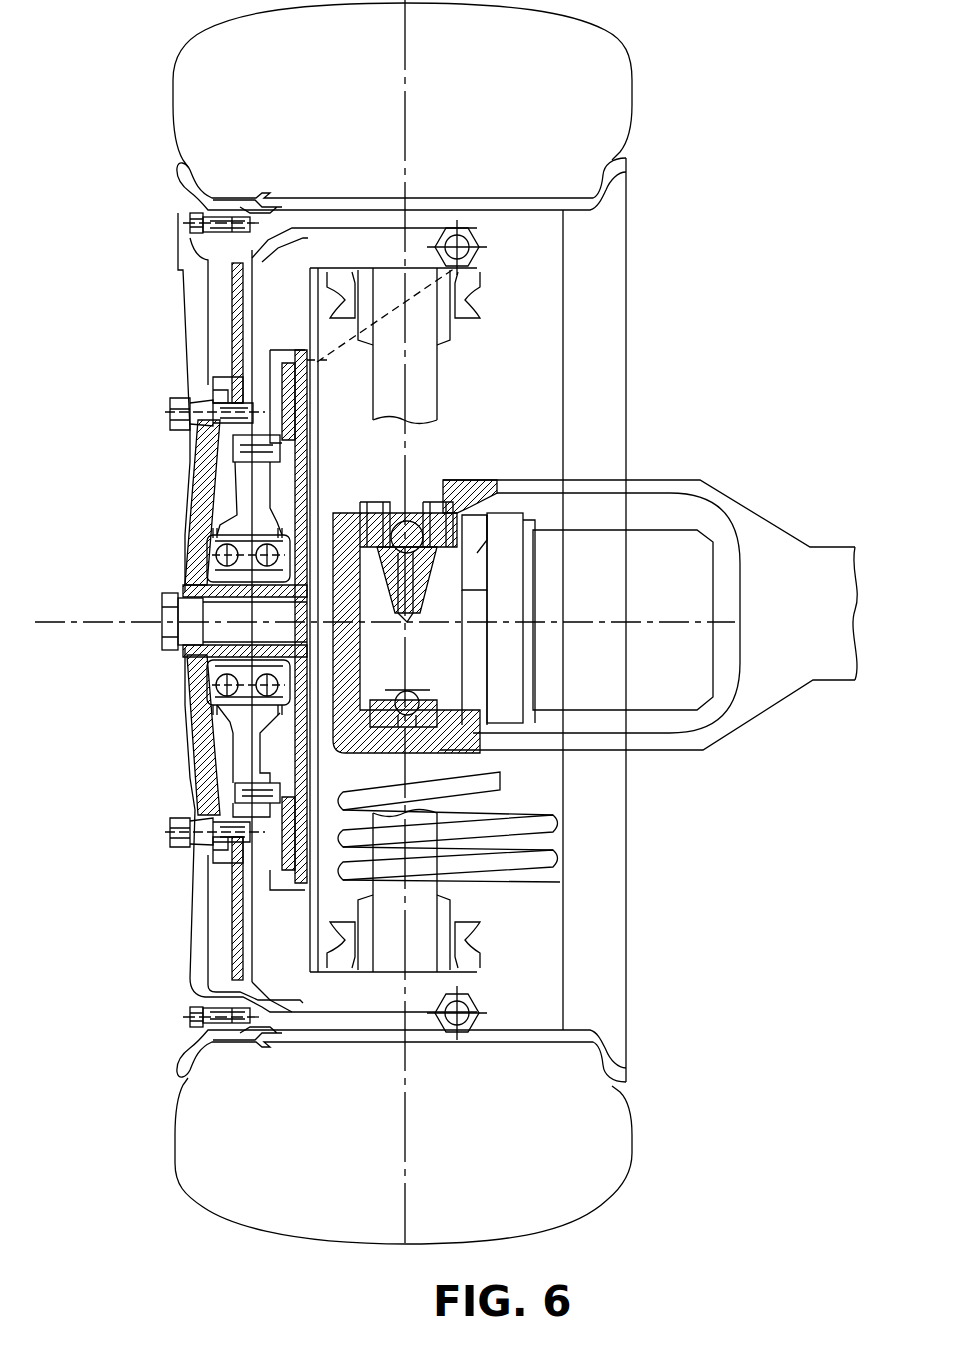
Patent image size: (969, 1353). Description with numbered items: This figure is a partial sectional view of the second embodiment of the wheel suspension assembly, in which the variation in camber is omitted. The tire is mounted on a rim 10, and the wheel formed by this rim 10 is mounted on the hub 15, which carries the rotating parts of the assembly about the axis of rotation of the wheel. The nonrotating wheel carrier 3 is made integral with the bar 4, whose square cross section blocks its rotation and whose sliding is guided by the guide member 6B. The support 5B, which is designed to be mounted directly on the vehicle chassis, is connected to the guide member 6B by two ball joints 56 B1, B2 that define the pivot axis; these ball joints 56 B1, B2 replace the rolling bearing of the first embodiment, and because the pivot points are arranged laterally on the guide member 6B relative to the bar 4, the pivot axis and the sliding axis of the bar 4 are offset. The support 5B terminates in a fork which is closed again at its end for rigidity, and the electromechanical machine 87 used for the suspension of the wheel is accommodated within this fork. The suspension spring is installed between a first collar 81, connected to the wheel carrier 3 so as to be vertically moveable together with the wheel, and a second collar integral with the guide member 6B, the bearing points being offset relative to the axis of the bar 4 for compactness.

The rim 10 is at (627, 197).
The wheel carrier 3 is at (262, 950).
The hub 15 is at (178, 665).
The bar 4 is at (423, 932).
The support 5B is at (767, 688).
The guide member 6B is at (477, 553).
The electromechanical machine 87 is at (643, 540).
The ball joint 56 is at (547, 599).
The ball joint B2 is at (405, 512).
The ball joint B1 is at (415, 703).
The first collar 81 is at (560, 867).